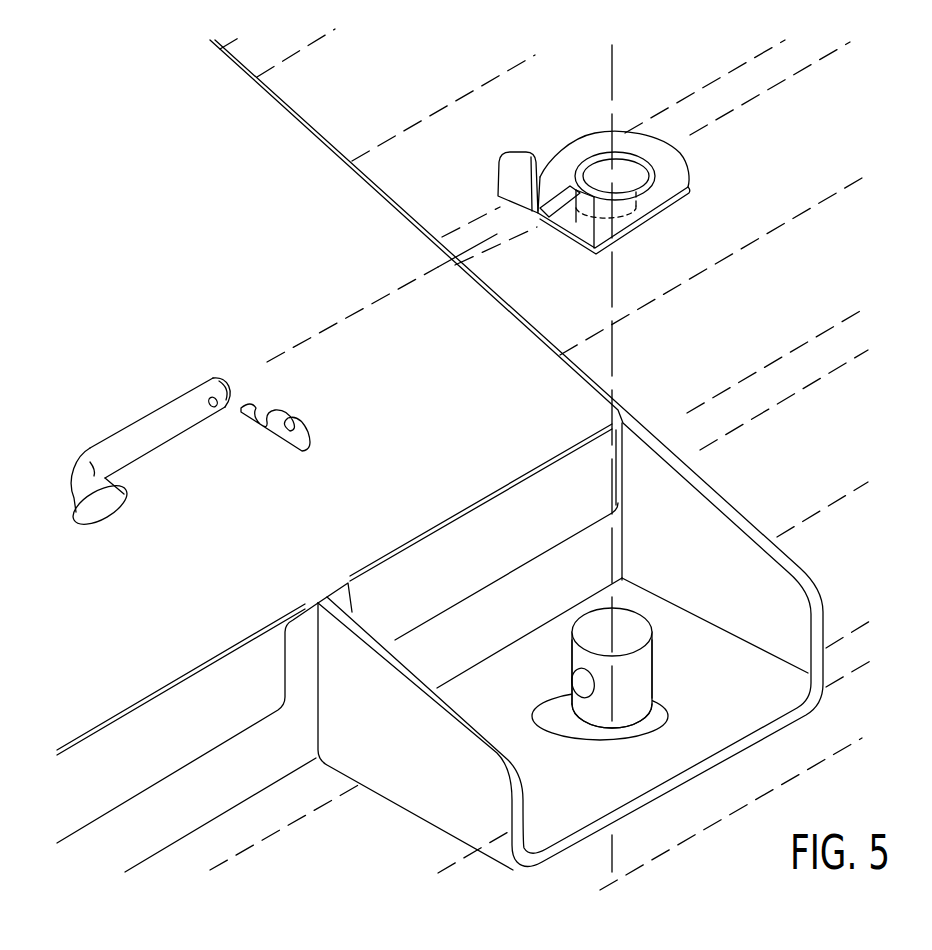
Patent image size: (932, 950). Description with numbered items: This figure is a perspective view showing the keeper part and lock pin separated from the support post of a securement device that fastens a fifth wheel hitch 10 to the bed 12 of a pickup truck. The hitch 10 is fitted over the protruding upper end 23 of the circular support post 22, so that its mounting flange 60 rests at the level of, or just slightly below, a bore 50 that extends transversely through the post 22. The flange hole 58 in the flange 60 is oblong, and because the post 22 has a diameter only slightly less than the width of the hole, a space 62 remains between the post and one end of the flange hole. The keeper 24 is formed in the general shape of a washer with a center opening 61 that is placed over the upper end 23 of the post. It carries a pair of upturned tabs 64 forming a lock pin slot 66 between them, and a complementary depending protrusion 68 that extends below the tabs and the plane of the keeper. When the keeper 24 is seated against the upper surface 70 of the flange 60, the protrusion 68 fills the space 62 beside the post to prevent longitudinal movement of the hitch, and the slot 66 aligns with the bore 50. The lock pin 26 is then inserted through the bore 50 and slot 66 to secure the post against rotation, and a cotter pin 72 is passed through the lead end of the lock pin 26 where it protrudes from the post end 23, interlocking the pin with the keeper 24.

The fifth wheel hitch 10 is at (505, 420).
The bed 12 is at (726, 369).
The support post 22 is at (620, 643).
The upper end 23 is at (655, 665).
The keeper 24 is at (591, 191).
The lock pin 26 is at (155, 440).
The bore 50 is at (576, 679).
The flange hole 58 is at (630, 722).
The mounting flange 60 is at (805, 582).
The center opening 61 is at (647, 172).
The space 62 is at (550, 712).
The upturned tabs 64 is at (518, 178).
The lock pin slot 66 is at (553, 180).
The depending protrusion 68 is at (551, 225).
The upper surface 70 is at (648, 775).
The cotter pin 72 is at (310, 430).